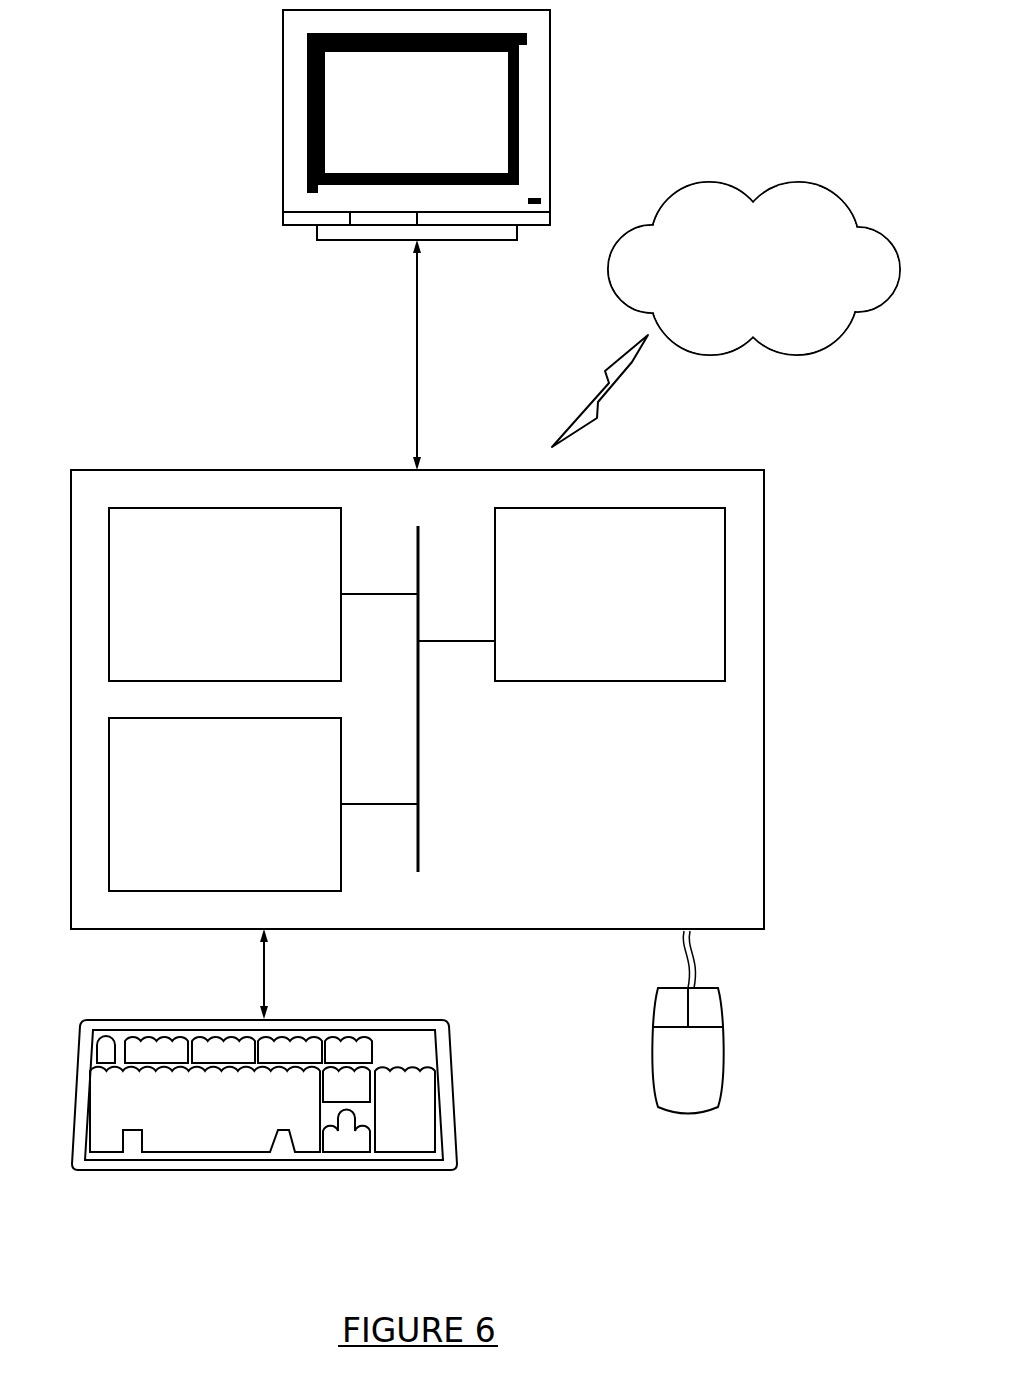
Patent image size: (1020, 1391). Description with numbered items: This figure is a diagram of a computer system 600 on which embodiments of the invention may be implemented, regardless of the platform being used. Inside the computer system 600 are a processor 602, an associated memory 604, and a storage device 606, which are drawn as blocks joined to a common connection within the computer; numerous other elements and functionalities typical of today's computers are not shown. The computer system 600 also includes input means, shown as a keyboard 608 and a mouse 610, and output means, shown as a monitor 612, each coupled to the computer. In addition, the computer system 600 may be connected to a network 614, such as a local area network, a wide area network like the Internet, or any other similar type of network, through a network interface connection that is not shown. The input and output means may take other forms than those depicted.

The computer system 600 is at (790, 540).
The processor 602 is at (588, 606).
The memory 604 is at (202, 606).
The storage device 606 is at (202, 817).
The keyboard 608 is at (185, 1122).
The mouse 610 is at (665, 1074).
The monitor 612 is at (395, 127).
The network 614 is at (732, 282).